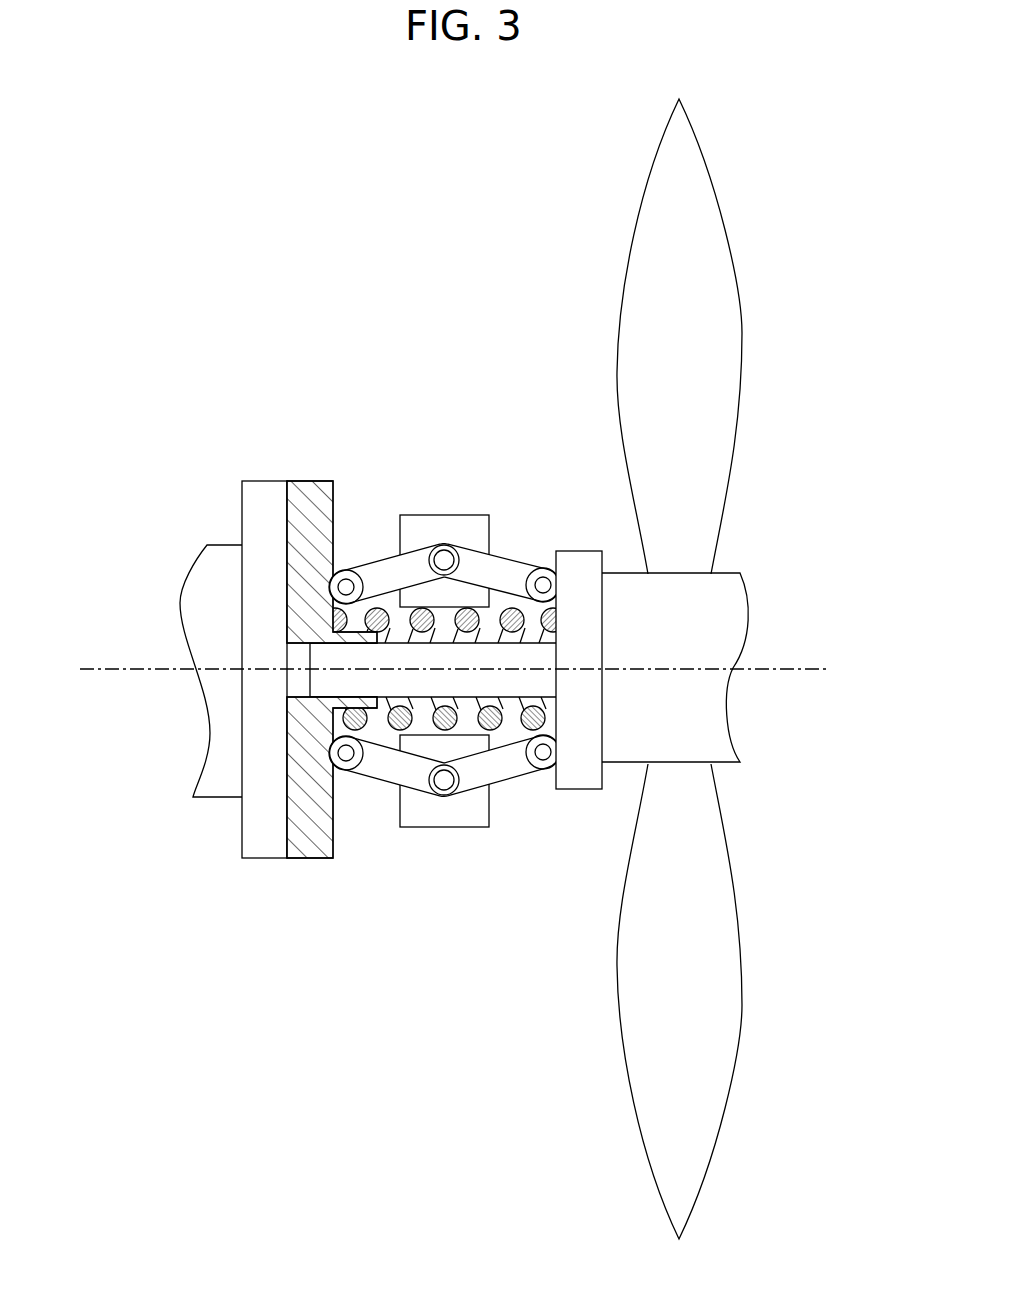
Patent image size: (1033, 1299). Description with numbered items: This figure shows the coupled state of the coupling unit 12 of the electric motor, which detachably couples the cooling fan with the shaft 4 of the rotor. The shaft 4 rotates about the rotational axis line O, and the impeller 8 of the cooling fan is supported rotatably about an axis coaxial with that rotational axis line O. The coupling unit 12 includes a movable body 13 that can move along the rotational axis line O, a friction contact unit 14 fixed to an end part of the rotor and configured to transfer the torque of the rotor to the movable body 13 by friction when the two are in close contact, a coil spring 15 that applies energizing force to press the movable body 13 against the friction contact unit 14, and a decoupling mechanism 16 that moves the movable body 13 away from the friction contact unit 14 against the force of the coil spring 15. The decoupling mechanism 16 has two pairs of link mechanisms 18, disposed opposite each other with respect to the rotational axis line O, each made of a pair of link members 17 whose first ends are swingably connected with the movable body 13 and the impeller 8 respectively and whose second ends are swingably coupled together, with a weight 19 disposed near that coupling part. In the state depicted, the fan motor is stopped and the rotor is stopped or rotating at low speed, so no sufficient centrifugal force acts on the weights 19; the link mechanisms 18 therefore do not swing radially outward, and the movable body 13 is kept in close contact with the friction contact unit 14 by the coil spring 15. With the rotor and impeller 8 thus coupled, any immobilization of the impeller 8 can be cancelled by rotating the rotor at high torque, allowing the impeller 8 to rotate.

The shaft 4 is at (222, 545).
The impeller 8 is at (742, 322).
The coupling unit 12 is at (421, 605).
The movable body 13 is at (315, 481).
The friction contact unit 14 is at (262, 481).
The coil spring 15 is at (497, 730).
The decoupling mechanism 16 is at (444, 666).
The link member 17 is at (412, 548).
The link mechanism 18 is at (366, 548).
The weight 19 is at (440, 515).
The rotational axis line O is at (142, 669).